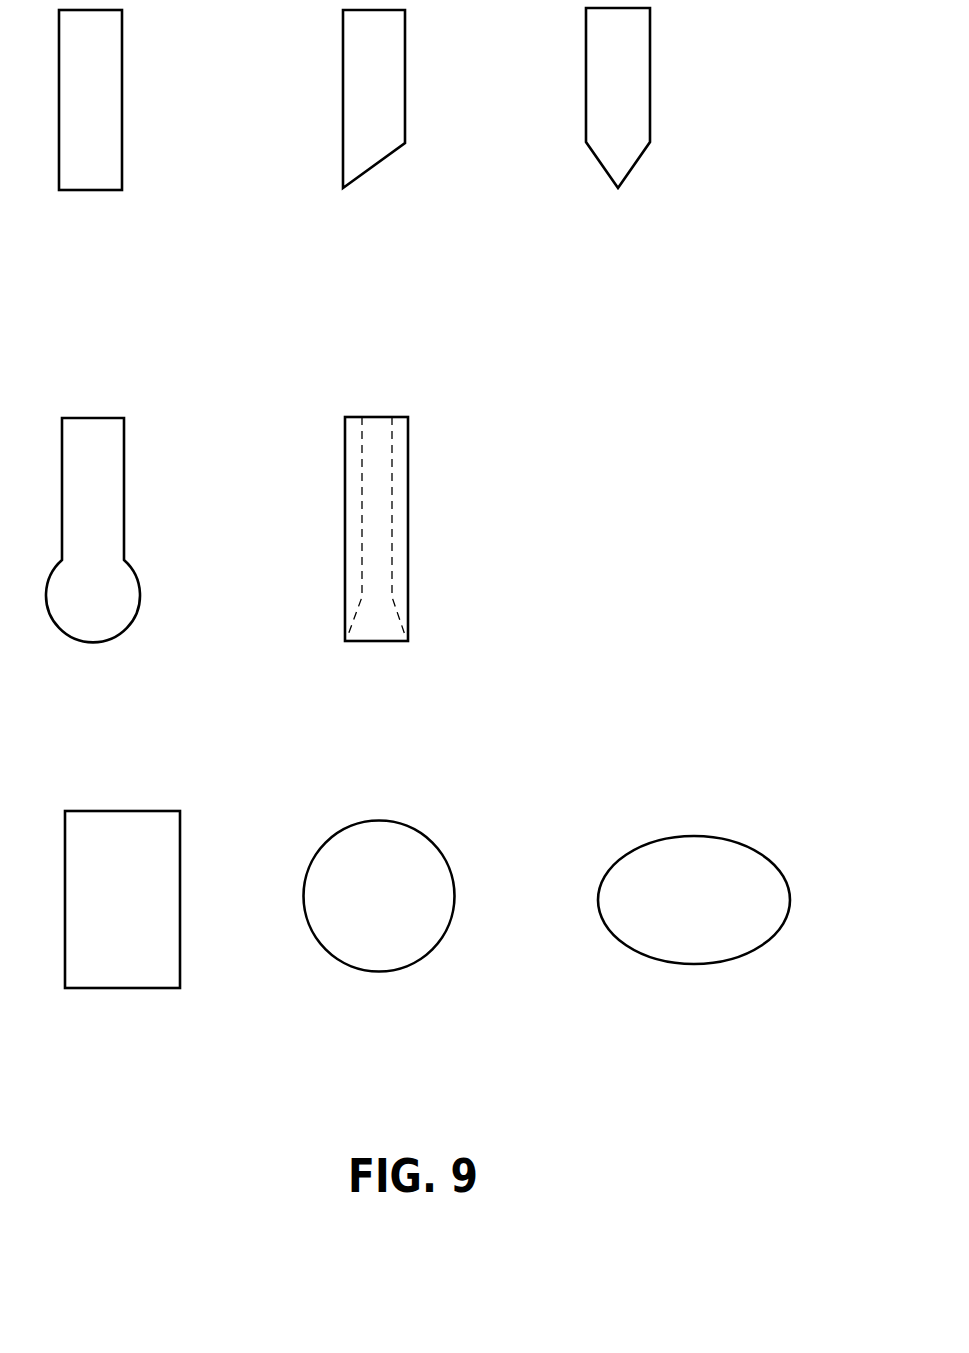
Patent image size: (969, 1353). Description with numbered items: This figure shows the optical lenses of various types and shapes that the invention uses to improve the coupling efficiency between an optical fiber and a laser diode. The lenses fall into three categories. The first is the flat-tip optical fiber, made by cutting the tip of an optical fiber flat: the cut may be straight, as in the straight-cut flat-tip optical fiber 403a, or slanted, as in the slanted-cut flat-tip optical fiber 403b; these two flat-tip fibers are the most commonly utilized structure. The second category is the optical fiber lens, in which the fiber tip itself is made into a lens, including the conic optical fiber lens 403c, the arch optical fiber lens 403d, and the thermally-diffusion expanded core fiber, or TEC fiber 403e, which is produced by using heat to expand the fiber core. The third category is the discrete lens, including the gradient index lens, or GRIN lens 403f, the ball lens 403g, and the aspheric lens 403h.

The straight-cut flat-tip optical fiber 403a is at (105, 145).
The slanted-cut flat-tip optical fiber 403b is at (380, 113).
The conic optical fiber lens 403c is at (638, 102).
The arch optical fiber lens 403d is at (109, 524).
The thermally-diffusion expanded core fiber (TEC fiber) 403e is at (397, 522).
The gradient index lens (GRIN lens) 403f is at (157, 975).
The ball lens 403g is at (417, 937).
The aspheric lens 403h is at (695, 950).